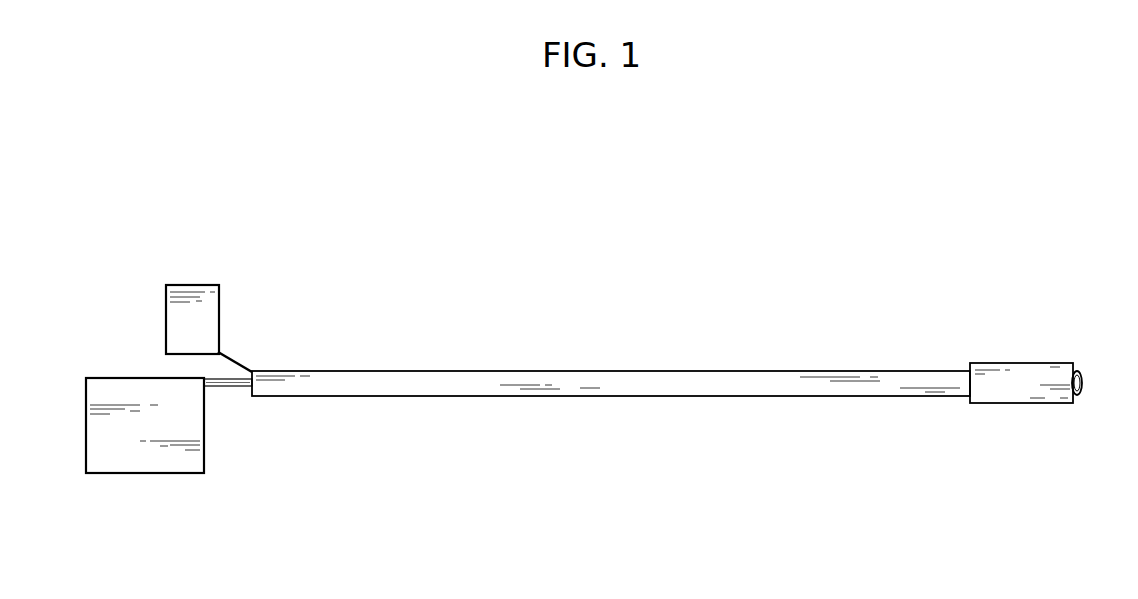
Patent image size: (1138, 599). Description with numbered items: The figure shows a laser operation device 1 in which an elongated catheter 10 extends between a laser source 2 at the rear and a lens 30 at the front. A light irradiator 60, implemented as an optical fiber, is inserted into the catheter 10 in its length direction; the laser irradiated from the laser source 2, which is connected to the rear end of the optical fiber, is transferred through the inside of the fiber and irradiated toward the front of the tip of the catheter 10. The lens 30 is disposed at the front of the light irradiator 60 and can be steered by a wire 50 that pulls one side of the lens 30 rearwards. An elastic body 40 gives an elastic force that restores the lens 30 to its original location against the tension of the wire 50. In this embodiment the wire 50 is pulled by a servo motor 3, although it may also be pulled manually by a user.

The laser operation device 1 is at (662, 280).
The laser source 2 is at (145, 474).
The servo motor 3 is at (200, 284).
The catheter 10 is at (492, 398).
The lens 30 is at (1085, 386).
The elastic body 40 is at (1077, 364).
The wire 50 is at (233, 352).
The light irradiator 60 is at (226, 388).